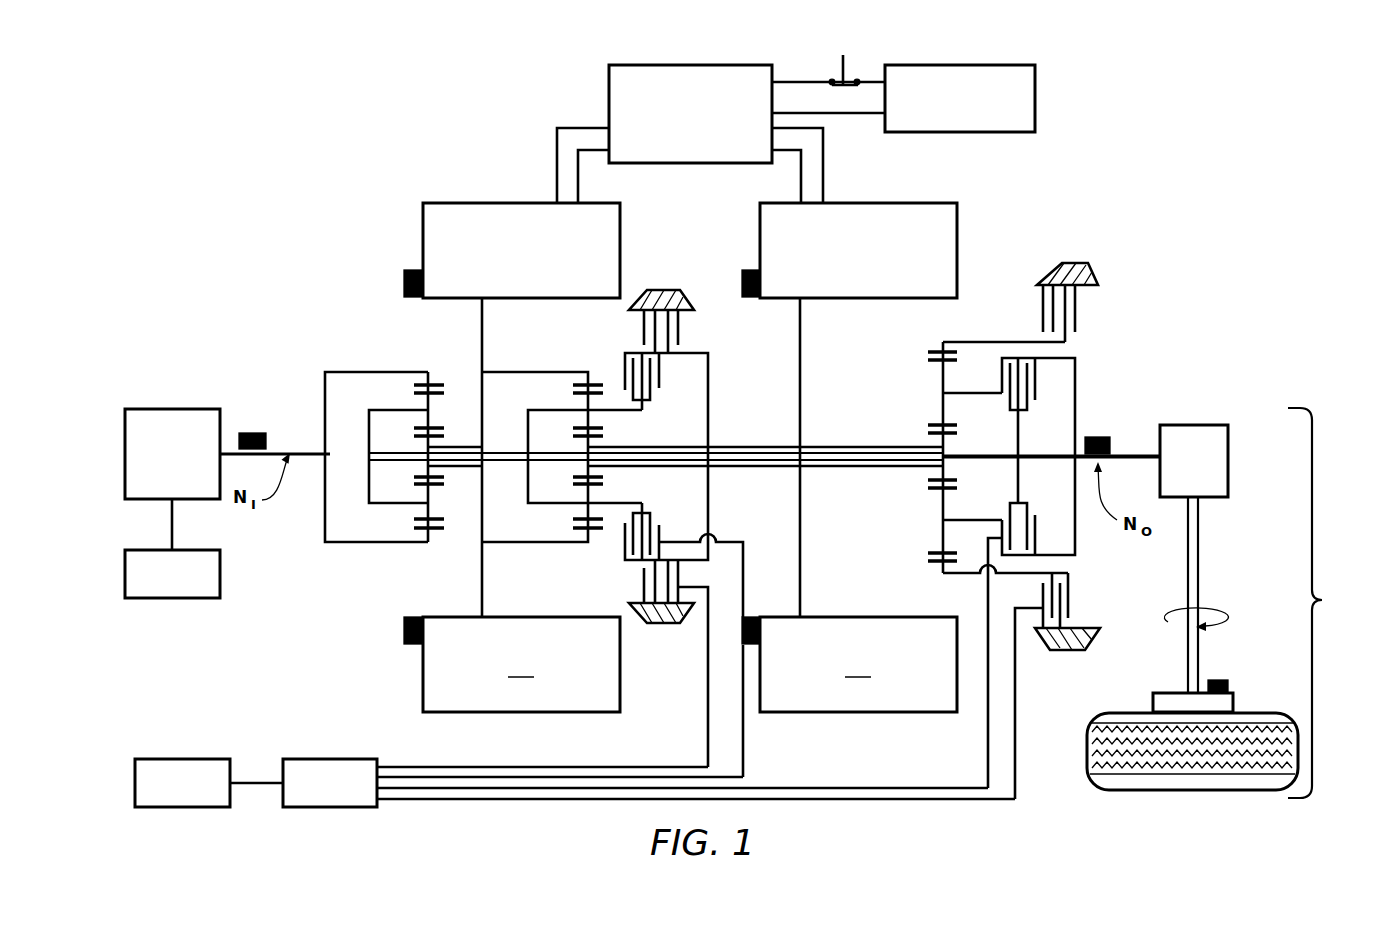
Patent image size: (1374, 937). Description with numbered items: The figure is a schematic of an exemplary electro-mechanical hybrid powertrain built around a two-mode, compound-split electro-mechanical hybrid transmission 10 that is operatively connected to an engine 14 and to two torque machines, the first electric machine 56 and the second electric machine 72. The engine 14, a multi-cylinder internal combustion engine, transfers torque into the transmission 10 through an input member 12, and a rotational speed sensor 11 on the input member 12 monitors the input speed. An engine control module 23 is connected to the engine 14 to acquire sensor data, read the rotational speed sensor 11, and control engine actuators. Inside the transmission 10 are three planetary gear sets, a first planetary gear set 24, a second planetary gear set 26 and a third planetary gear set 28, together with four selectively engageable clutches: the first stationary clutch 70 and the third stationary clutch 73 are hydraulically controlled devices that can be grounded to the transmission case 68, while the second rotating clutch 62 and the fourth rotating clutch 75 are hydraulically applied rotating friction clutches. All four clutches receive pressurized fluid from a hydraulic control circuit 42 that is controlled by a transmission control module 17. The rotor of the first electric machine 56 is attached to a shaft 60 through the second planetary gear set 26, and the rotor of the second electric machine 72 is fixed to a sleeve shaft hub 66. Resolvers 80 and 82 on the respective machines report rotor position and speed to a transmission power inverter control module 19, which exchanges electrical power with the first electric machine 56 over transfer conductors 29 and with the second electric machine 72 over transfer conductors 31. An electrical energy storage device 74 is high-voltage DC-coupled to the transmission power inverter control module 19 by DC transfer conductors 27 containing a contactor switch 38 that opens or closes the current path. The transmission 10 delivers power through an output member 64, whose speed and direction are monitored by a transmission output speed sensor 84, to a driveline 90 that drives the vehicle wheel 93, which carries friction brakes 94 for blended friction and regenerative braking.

The electro-mechanical hybrid transmission 10 is at (384, 166).
The rotational speed sensor 11 is at (253, 432).
The input member 12 is at (300, 450).
The engine 14 is at (177, 409).
The transmission control module 17 is at (172, 759).
The transmission power inverter control module 19 is at (609, 82).
The engine control module 23 is at (220, 590).
The first planetary gear set 24 is at (418, 364).
The second planetary gear set 26 is at (578, 364).
The DC transfer conductors 27 is at (790, 80).
The third planetary gear set 28 is at (934, 343).
The transfer conductors 29 is at (557, 160).
The transfer conductors 31 is at (823, 158).
The contactor switch 38 is at (847, 65).
The hydraulic control circuit 42 is at (297, 759).
The first electric machine 56 is at (423, 237).
The shaft 60 is at (993, 453).
The clutch C2 62 is at (1042, 399).
The output member 64 is at (1130, 455).
The sleeve shaft hub 66 is at (838, 447).
The transmission case 68 is at (660, 290).
The clutch C1 70 is at (1033, 305).
The second electric machine 72 is at (957, 218).
The clutch C3 73 is at (685, 335).
The electrical energy storage device 74 is at (1035, 85).
The clutch C4 75 is at (666, 389).
The resolver 80 is at (404, 283).
The resolver 82 is at (751, 270).
The transmission output speed sensor 84 is at (1098, 437).
The driveline 90 is at (1218, 603).
The vehicle wheel 93 is at (1153, 703).
The friction brakes 94 is at (1220, 680).